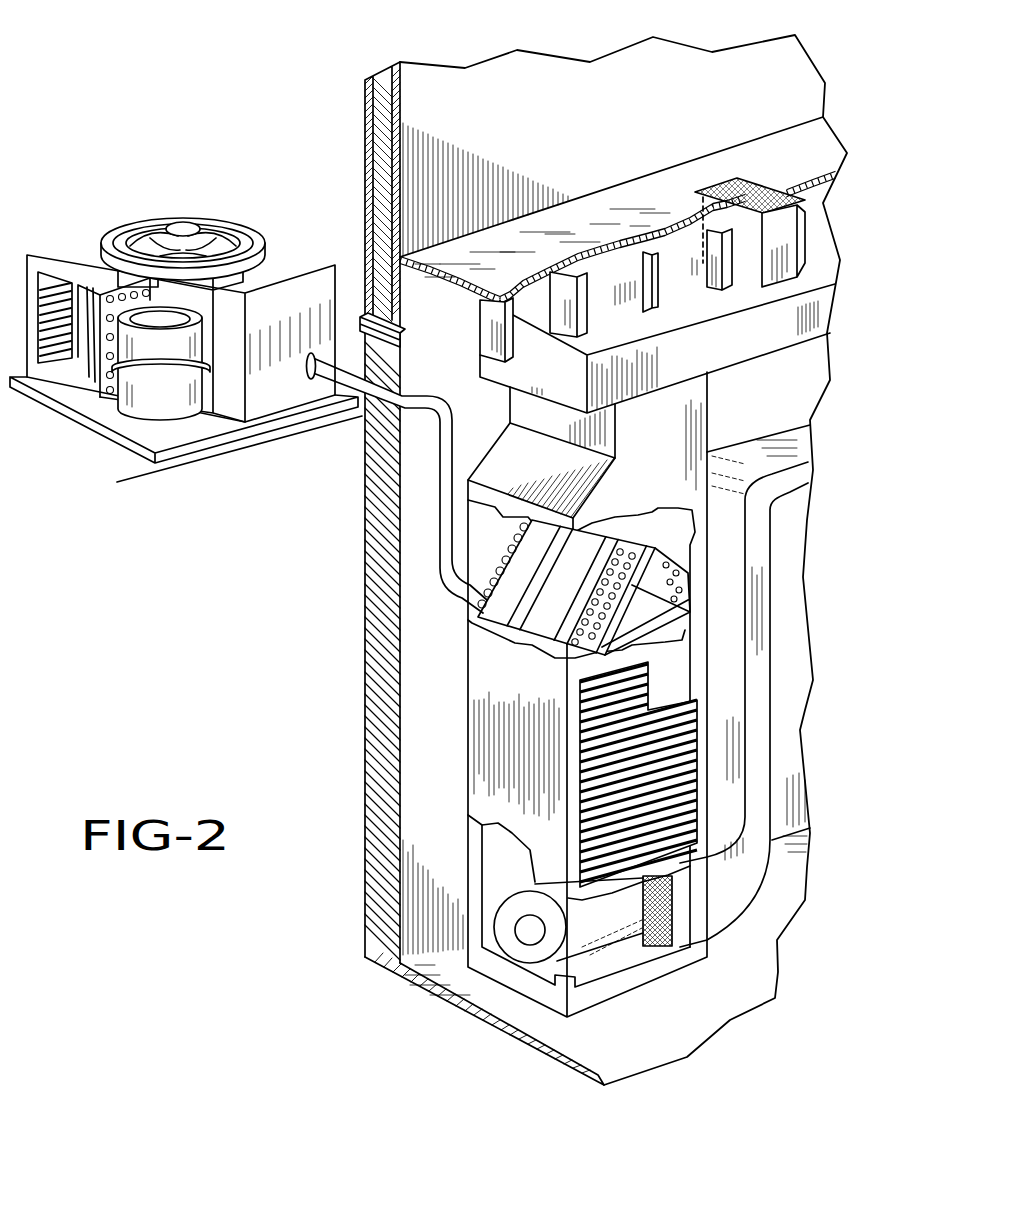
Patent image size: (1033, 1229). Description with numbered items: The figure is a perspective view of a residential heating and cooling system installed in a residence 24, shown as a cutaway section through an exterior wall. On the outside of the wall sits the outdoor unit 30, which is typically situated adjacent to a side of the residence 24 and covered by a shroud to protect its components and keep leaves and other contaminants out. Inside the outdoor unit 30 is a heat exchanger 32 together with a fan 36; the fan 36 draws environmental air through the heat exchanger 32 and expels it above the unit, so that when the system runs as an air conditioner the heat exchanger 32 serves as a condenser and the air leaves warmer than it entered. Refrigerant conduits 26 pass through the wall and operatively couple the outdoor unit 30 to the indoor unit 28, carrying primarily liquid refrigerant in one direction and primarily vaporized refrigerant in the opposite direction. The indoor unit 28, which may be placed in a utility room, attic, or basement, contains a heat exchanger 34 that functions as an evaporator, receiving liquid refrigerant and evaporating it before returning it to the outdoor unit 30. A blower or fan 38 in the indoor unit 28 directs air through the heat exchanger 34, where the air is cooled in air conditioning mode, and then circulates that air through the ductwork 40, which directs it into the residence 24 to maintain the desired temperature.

The residence 24 is at (510, 107).
The refrigerant conduits 26 is at (438, 473).
The indoor unit 28 is at (458, 738).
The outdoor unit 30 is at (184, 285).
The heat exchanger 32 is at (107, 296).
The heat exchanger 34 is at (532, 617).
The fan 36 is at (205, 230).
The blower or fan 38 is at (517, 948).
The ductwork 40 is at (773, 253).